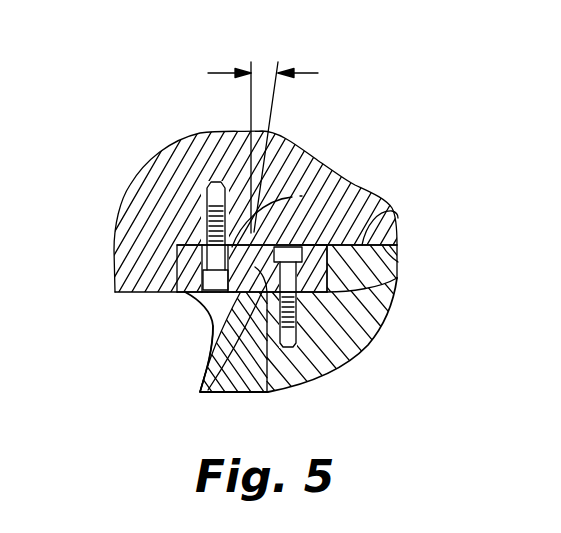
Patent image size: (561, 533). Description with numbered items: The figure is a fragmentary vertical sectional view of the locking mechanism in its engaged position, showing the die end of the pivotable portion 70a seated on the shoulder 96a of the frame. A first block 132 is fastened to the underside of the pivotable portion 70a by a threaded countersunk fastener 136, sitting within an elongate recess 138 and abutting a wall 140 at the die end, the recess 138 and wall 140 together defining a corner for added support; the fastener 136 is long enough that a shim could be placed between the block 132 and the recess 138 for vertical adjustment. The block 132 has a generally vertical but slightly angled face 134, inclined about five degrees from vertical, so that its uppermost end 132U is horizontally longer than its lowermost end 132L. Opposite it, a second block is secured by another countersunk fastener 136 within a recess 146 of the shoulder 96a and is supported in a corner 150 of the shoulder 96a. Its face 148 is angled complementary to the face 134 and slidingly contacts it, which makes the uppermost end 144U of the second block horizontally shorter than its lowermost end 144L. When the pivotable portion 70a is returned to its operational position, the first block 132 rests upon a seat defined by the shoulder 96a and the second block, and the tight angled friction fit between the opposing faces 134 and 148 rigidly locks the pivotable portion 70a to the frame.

The pivotable portion 70a is at (290, 143).
The face of the second block 148 is at (318, 192).
The uppermost end of the second block 144U is at (322, 240).
The shoulder 96a is at (398, 210).
The first block 132 is at (168, 293).
The uppermost end of the first block 132U is at (193, 247).
The lowermost end of the first block 132L is at (205, 294).
The wall 140 is at (115, 270).
The elongate recess 138 is at (398, 252).
The corner of the shoulder 150 is at (396, 283).
The threaded countersunk fastener 136 is at (207, 207).
The lowermost end of the second block 144L is at (270, 393).
The angled face 134 is at (197, 385).
The recess of the shoulder 146 is at (205, 318).